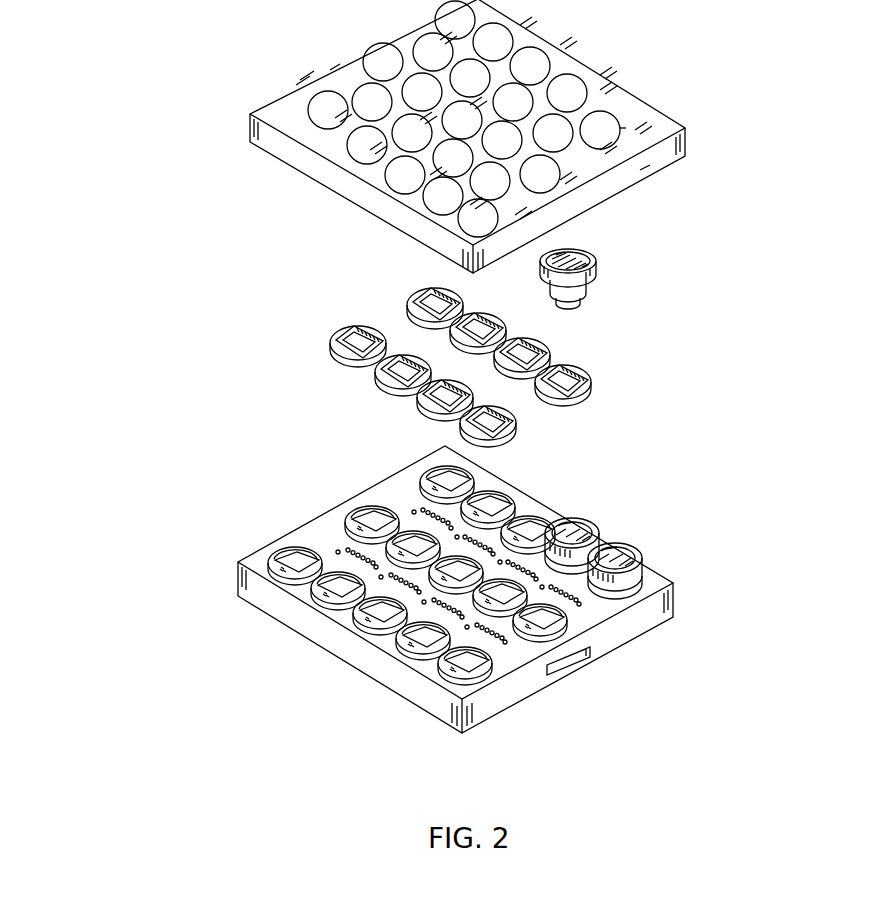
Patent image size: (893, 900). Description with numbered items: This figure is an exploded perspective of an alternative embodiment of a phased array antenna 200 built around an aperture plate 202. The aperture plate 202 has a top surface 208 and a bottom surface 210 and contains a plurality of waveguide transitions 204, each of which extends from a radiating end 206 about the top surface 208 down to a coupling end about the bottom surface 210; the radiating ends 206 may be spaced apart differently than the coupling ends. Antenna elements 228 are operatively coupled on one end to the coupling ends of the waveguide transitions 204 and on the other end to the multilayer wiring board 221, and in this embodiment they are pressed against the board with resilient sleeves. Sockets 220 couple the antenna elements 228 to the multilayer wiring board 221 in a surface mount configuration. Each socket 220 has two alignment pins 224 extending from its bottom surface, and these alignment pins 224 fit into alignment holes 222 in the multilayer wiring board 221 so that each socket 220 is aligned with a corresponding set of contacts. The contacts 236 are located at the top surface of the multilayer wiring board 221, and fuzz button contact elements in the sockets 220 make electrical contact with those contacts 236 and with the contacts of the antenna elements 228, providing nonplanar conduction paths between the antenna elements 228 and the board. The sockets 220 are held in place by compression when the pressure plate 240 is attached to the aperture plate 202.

The phased array antenna 200 is at (218, 278).
The aperture plate 202 is at (250, 116).
The waveguide transitions 204 is at (425, 47).
The radiating end 206 is at (625, 128).
The top surface 208 is at (610, 87).
The bottom surface 210 is at (643, 178).
The sockets 220 is at (591, 376).
The multilayer wiring board 221 is at (675, 585).
The alignment holes 222 is at (415, 517).
The alignment pins 224 is at (350, 358).
The antenna elements 228 is at (585, 285).
The contacts 236 is at (356, 561).
The pressure plate 240 is at (475, 722).